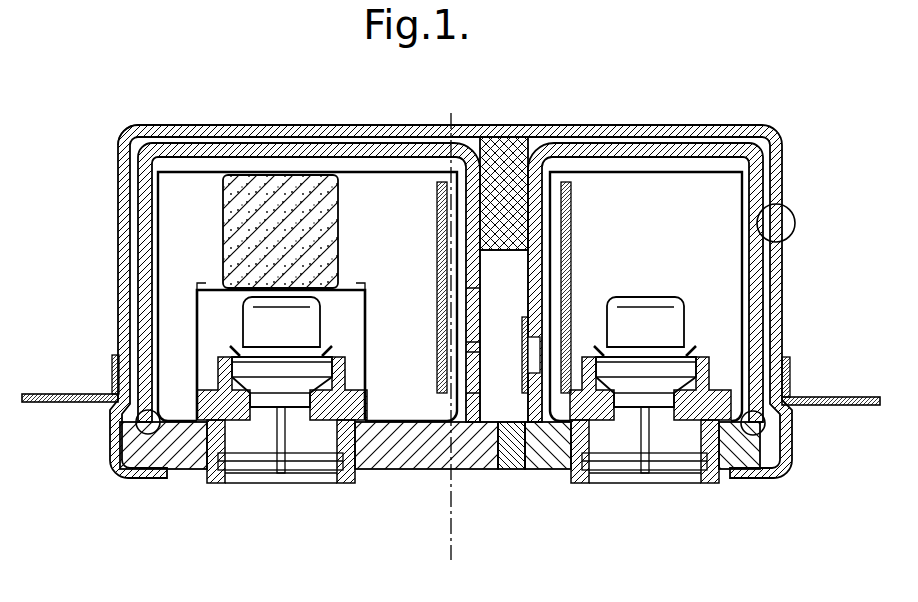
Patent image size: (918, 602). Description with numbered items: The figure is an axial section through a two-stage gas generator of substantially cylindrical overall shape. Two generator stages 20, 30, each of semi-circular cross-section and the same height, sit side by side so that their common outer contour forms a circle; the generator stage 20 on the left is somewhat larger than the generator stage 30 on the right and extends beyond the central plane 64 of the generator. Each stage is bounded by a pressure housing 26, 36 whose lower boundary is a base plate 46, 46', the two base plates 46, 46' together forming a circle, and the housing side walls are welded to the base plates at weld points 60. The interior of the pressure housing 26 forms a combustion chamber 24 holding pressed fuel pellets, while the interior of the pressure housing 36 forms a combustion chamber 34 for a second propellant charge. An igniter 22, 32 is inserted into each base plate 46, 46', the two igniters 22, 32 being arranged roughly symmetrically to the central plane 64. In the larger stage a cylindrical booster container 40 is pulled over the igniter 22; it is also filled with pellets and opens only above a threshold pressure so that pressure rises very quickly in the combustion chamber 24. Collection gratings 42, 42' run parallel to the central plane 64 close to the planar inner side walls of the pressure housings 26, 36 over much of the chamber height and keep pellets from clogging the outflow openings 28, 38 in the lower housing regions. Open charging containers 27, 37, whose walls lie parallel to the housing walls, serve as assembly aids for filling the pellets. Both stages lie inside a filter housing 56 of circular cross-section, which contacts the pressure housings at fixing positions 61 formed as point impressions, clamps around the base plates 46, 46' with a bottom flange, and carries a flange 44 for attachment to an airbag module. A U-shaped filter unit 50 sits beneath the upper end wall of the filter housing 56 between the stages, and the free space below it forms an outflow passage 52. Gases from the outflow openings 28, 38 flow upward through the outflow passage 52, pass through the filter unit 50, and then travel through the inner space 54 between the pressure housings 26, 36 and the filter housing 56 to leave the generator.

The generator stage 20 is at (142, 152).
The igniter 22 is at (263, 332).
The combustion chamber 24 is at (360, 223).
The pressure housing 26 is at (198, 150).
The charging container 27 is at (165, 250).
The outflow opening 28 is at (470, 383).
The generator stage 30 is at (752, 147).
The igniter 32 is at (722, 385).
The combustion chamber 34 is at (670, 197).
The pressure housing 36 is at (760, 170).
The charging container 37 is at (745, 280).
The outflow opening 38 is at (523, 363).
The booster container 40 is at (190, 295).
The collection grating 42 is at (425, 232).
The collection grating 42' is at (583, 232).
The flange 44 is at (848, 405).
The base plate 46 is at (309, 482).
The base plate 46' is at (629, 488).
The filter unit 50 is at (505, 143).
The outflow passage 52 is at (508, 282).
The inner space 54 is at (274, 140).
The filter housing 56 is at (648, 125).
The weld point 60 is at (150, 434).
The fixing position 61 is at (782, 218).
The central plane 64 is at (452, 354).